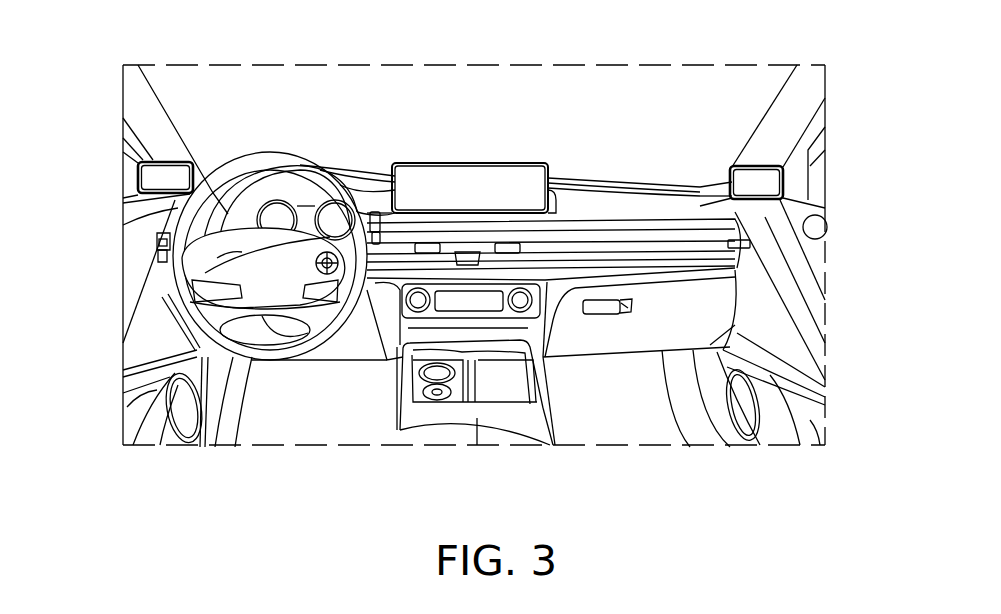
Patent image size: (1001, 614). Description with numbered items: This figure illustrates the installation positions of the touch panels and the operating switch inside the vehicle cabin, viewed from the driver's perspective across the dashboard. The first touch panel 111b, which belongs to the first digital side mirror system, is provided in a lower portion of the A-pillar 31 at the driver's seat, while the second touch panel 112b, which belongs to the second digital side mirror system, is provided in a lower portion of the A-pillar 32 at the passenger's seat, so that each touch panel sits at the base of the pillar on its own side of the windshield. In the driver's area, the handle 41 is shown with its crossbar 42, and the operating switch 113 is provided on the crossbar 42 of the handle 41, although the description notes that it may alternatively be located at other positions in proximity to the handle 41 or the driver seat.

The A-pillar 31 is at (134, 95).
The A-pillar 32 is at (808, 95).
The first touch panel 111b is at (152, 183).
The second touch panel 112b is at (776, 184).
The handle 41 is at (168, 238).
The crossbar 42 is at (240, 255).
The operating switch 113 is at (257, 260).